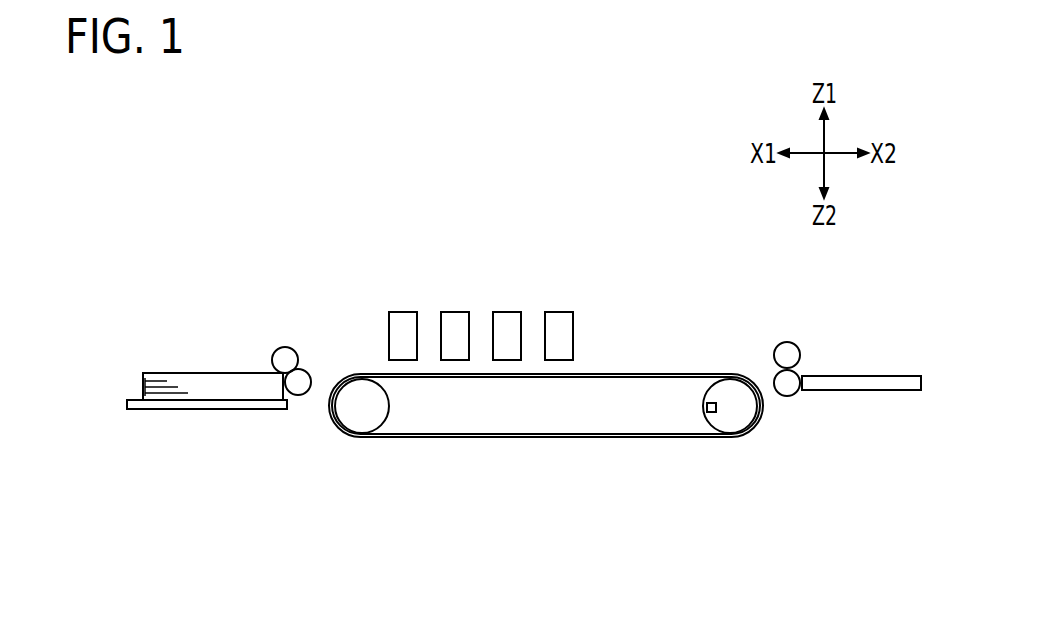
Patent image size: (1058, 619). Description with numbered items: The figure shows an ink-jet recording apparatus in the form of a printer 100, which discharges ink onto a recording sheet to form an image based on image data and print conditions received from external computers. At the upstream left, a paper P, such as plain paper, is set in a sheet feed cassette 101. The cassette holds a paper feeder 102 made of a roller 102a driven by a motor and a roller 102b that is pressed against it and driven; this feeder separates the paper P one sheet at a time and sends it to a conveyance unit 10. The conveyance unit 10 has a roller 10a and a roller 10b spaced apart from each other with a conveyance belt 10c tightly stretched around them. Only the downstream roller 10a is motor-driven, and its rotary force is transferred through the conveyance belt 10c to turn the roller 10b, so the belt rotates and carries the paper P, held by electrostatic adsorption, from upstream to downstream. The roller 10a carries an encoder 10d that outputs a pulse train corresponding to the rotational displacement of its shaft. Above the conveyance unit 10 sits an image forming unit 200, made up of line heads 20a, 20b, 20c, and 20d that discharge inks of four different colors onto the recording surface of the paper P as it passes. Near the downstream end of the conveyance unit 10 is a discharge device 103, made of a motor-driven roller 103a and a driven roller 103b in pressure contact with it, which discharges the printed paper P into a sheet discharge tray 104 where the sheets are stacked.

The printer 100 is at (654, 254).
The paper P is at (210, 378).
The sheet feed cassette 101 is at (183, 407).
The paper feeder 102 is at (378, 320).
The roller 102a is at (283, 347).
The roller 102b is at (308, 371).
The image forming unit 200 is at (568, 203).
The line head 20a is at (402, 313).
The line head 20b is at (453, 313).
The line head 20c is at (505, 313).
The line head 20d is at (558, 313).
The conveyance unit 10 is at (775, 522).
The roller 10a is at (735, 427).
The roller 10b is at (360, 425).
The conveyance belt 10c is at (490, 440).
The encoder 10d is at (709, 413).
The discharge device 103 is at (680, 296).
The roller 103a is at (776, 377).
The roller 103b is at (778, 348).
The sheet discharge tray 104 is at (838, 386).